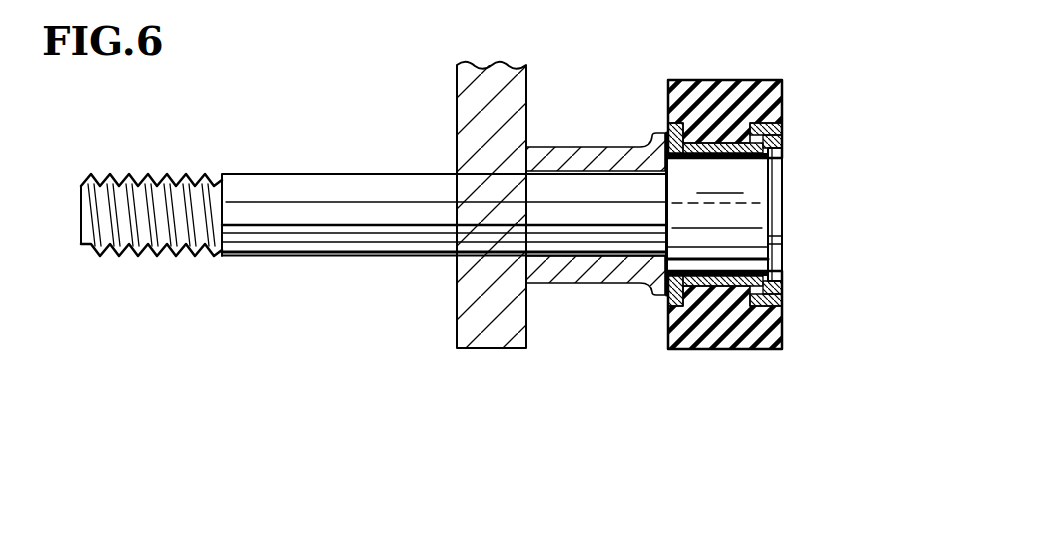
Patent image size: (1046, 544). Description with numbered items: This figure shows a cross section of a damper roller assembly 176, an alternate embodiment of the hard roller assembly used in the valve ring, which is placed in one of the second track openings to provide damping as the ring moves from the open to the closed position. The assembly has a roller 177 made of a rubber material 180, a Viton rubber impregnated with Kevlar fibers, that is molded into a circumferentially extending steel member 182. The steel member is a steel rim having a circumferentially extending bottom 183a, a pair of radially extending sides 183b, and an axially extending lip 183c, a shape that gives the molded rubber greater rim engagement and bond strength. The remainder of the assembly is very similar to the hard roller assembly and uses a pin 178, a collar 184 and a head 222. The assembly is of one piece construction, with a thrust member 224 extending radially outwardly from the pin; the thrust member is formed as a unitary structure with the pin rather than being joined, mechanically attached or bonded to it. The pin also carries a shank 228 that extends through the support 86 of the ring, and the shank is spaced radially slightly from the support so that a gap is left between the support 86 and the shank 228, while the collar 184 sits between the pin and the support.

The support 86 is at (482, 77).
The shank 228 is at (278, 183).
The collar 184 is at (627, 285).
The steel member 182 is at (687, 252).
The head 222 is at (720, 181).
The rubber material 180 is at (704, 349).
The bottom 183a is at (721, 128).
The sides 183b is at (670, 133).
The lip 183c is at (780, 123).
The damper roller assembly 176 is at (760, 245).
The roller 177 is at (772, 358).
The pin 178 is at (782, 208).
The thrust member 224 is at (782, 244).